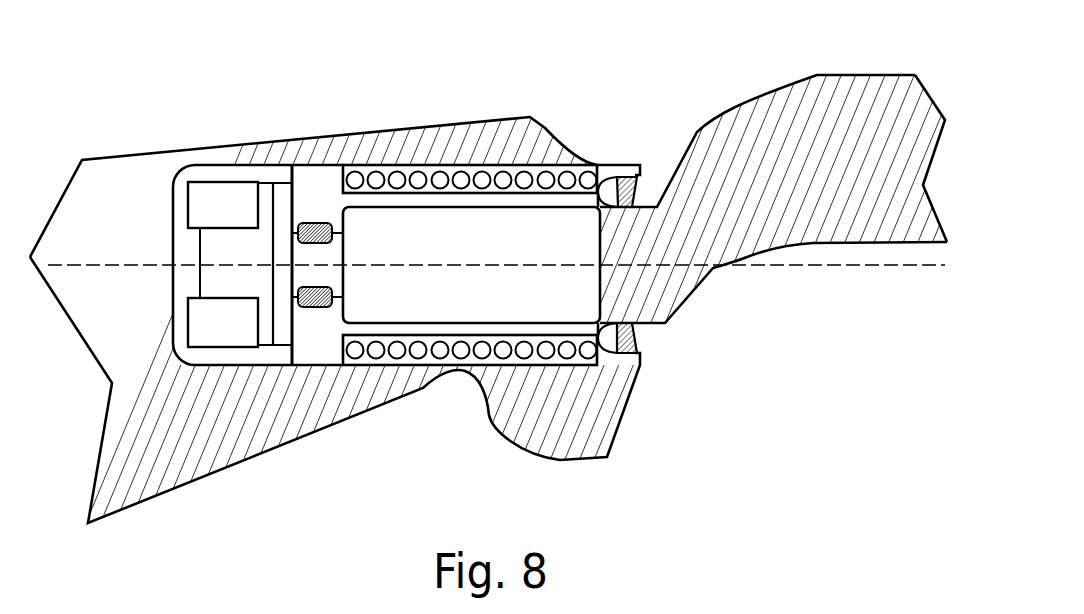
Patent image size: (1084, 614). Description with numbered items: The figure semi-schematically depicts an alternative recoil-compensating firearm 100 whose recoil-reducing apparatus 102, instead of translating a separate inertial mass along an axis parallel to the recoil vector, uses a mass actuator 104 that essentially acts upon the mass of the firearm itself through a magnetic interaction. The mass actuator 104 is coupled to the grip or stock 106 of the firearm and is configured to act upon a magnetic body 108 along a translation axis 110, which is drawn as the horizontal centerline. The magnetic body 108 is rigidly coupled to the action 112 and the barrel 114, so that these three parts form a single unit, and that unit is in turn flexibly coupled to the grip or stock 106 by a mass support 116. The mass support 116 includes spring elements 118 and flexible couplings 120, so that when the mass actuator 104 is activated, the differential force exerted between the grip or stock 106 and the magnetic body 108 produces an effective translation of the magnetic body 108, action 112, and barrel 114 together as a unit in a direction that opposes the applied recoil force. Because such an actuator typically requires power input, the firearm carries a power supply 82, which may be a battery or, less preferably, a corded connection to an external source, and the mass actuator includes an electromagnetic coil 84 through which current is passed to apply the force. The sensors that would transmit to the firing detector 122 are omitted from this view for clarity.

The recoil-compensating firearm 100 is at (410, 62).
The recoil-reducing apparatus 102 is at (456, 428).
The mass actuator 104 is at (401, 165).
The grip or stock 106 is at (205, 92).
The magnetic body 108 is at (427, 327).
The translation axis 110 is at (810, 264).
The action 112 is at (803, 53).
The barrel 114 is at (917, 30).
The mass support 116 is at (326, 205).
The spring elements 118 is at (315, 222).
The flexible couplings 120 is at (633, 191).
The firing detector 122 is at (217, 182).
The power supply 82 is at (210, 362).
The electromagnetic coil 84 is at (503, 173).